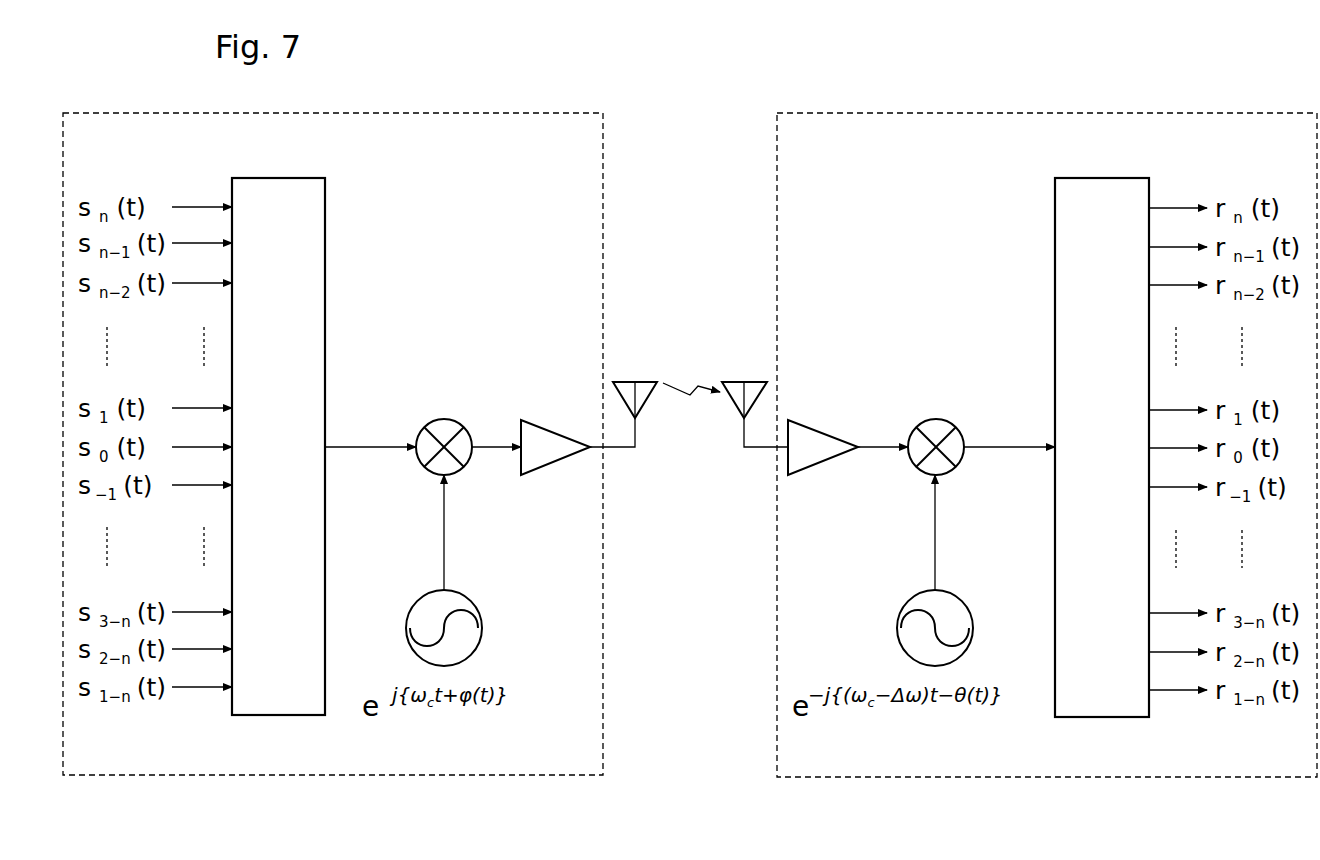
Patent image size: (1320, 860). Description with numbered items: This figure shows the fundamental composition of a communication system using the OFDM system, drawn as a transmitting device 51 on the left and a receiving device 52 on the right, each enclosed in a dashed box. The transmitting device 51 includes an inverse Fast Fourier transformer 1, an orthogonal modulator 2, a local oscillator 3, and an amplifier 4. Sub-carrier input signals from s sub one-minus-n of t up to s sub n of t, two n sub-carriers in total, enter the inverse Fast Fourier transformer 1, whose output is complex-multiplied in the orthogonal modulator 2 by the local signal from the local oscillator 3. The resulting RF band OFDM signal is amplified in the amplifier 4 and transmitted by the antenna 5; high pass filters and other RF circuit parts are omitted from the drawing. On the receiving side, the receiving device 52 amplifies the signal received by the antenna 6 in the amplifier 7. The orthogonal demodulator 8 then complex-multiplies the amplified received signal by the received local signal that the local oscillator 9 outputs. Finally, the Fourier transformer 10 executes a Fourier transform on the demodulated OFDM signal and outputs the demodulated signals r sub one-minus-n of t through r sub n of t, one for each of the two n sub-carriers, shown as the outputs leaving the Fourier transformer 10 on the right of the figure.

The inverse Fast Fourier transformer 1 is at (268, 178).
The orthogonal modulator 2 is at (450, 422).
The local oscillator 3 is at (472, 600).
The amplifier 4 is at (530, 426).
The antenna 5 is at (630, 382).
The antenna 6 is at (740, 382).
The amplifier 7 is at (818, 432).
The orthogonal demodulator 8 is at (944, 422).
The local oscillator 9 is at (962, 600).
The Fourier transformer 10 is at (1093, 178).
The transmitting device 51 is at (522, 113).
The receiving device 52 is at (1218, 113).